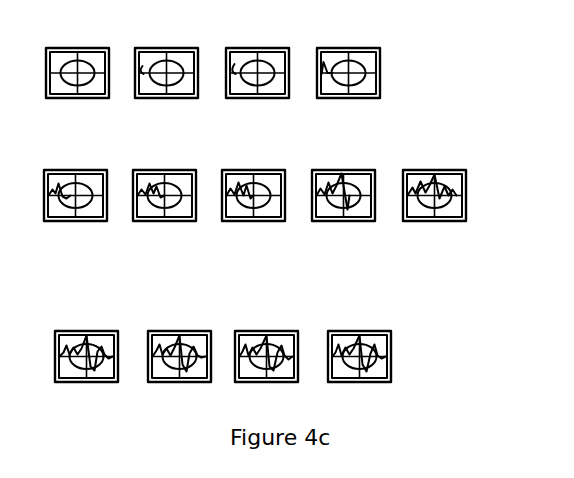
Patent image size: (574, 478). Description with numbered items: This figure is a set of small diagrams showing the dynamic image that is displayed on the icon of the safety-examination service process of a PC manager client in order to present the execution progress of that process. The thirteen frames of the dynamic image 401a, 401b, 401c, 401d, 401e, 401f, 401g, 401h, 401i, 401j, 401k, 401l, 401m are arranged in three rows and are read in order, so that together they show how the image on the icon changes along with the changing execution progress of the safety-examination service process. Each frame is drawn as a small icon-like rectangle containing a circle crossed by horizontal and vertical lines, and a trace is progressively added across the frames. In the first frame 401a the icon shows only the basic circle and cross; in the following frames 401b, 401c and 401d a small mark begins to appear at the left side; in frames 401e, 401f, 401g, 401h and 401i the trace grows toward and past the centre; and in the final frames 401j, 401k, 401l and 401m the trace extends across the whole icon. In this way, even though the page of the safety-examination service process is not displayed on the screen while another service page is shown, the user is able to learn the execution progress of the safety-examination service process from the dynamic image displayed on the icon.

The dynamic image 401a is at (78, 49).
The dynamic image 401b is at (166, 49).
The dynamic image 401c is at (258, 49).
The dynamic image 401d is at (348, 49).
The dynamic image 401e is at (76, 171).
The dynamic image 401f is at (164, 171).
The dynamic image 401g is at (254, 171).
The dynamic image 401h is at (344, 171).
The dynamic image 401i is at (434, 171).
The dynamic image 401j is at (86, 332).
The dynamic image 401k is at (180, 332).
The dynamic image 401l is at (266, 332).
The dynamic image 401m is at (360, 332).